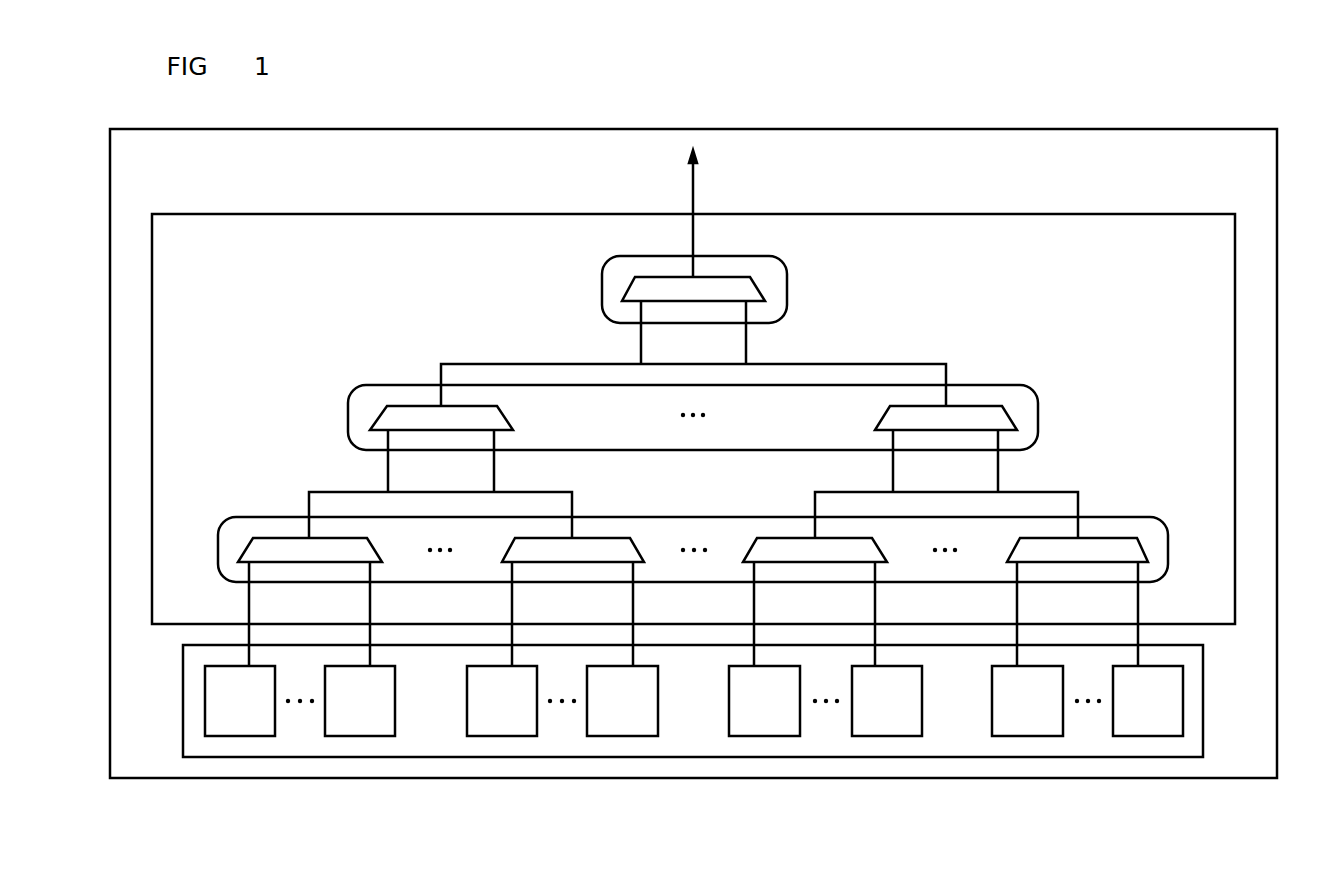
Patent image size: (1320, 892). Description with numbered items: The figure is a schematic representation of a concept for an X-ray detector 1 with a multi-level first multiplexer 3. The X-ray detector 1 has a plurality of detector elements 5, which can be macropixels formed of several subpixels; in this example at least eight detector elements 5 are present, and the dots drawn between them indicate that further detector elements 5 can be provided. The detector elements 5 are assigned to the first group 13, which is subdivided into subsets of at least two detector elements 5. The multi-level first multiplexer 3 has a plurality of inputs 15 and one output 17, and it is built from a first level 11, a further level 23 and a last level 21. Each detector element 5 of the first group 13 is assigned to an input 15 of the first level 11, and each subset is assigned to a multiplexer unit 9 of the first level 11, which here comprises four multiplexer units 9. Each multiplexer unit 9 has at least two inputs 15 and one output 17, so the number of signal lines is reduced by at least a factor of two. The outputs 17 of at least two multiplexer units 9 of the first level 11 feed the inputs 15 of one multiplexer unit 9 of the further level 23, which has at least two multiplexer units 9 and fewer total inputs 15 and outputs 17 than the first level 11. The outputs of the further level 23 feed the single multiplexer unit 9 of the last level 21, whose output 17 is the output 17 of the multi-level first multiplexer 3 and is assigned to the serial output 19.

The X-ray detector 1 is at (1000, 108).
The multi-level first multiplexer 3 is at (1118, 214).
The detector elements 5 is at (238, 736).
The multiplexer unit 9 is at (630, 283).
The first level 11 is at (1168, 545).
The first group 13 is at (1203, 700).
The inputs 15 is at (736, 345).
The output 17 is at (693, 235).
The serial output 19 is at (693, 187).
The last level 21 is at (787, 290).
The further level 23 is at (1038, 415).